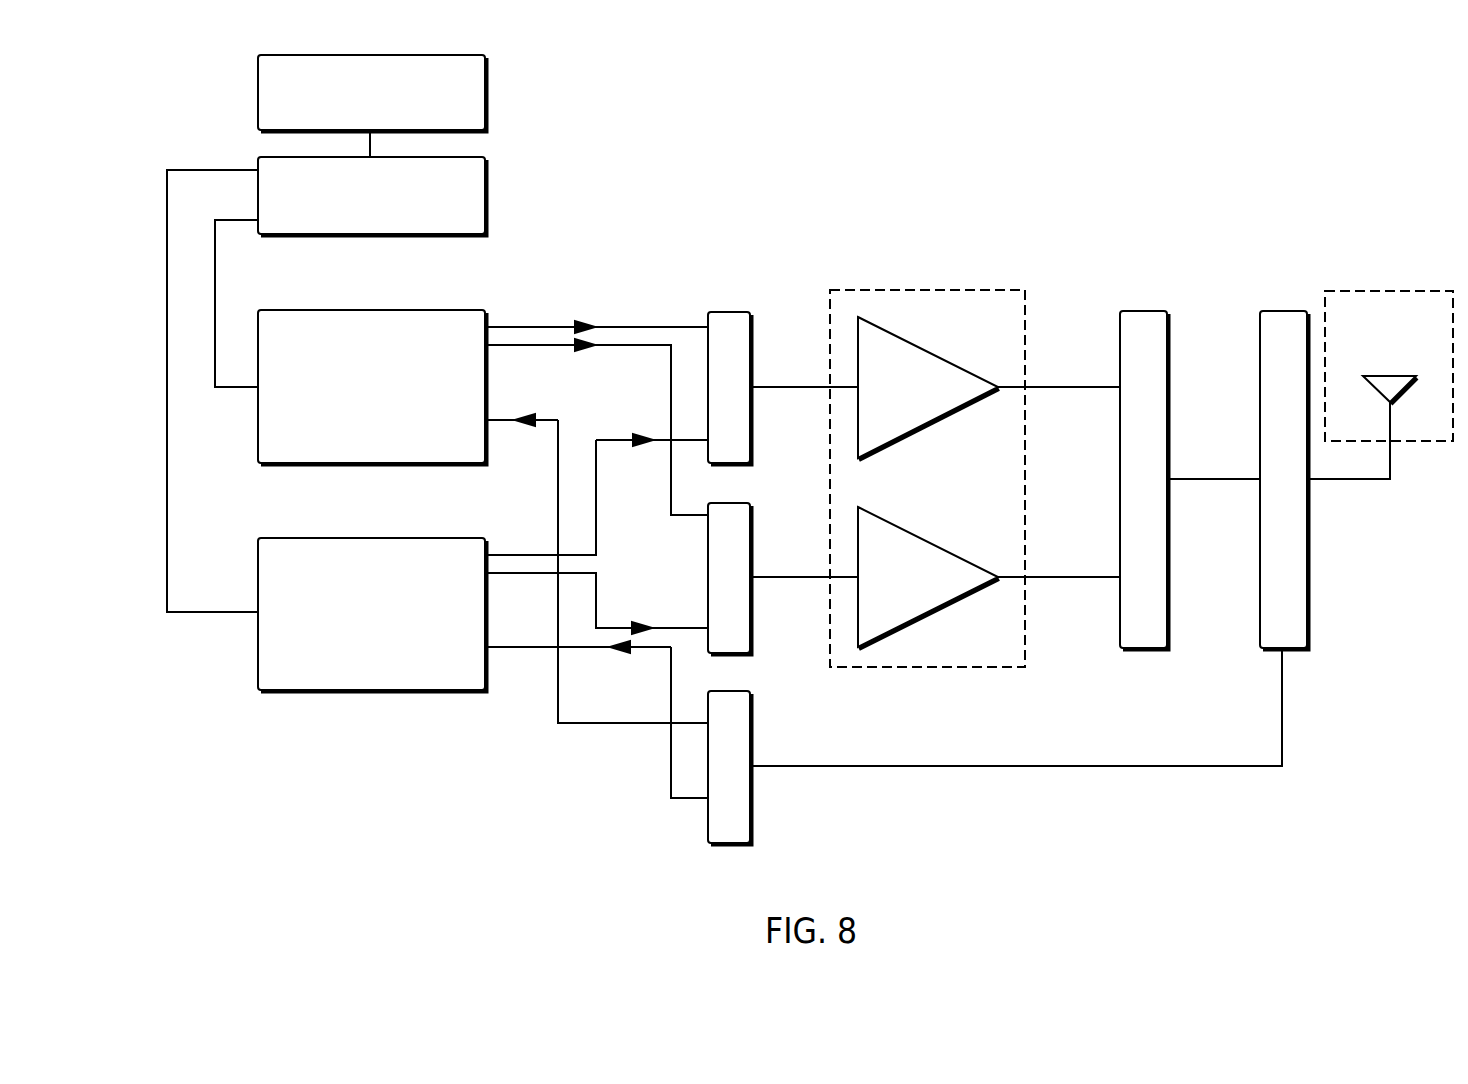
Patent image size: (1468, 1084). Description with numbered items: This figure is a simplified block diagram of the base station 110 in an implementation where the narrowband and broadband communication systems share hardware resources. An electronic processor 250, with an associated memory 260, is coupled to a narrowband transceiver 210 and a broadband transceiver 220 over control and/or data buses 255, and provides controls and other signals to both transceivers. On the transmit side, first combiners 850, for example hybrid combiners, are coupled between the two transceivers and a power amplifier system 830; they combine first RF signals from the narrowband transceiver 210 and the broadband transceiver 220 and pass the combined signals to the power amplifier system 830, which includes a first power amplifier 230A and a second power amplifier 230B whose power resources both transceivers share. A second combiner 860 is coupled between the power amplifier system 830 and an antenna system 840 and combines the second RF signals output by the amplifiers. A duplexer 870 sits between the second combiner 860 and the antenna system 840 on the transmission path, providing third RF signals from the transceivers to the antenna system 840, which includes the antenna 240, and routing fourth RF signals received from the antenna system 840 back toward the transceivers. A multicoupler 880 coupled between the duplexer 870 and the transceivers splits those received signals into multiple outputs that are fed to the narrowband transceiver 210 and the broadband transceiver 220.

The base station 110 is at (1374, 112).
The narrowband transceiver 210 is at (370, 310).
The broadband transceiver 220 is at (370, 538).
The first power amplifier 230A is at (930, 352).
The second power amplifier 230B is at (930, 542).
The antenna 240 is at (1389, 376).
The electronic processor 250 is at (258, 193).
The control and/or data buses 255 is at (167, 392).
The memory 260 is at (258, 91).
The power amplifier system 830 is at (929, 290).
The antenna system 840 is at (1390, 291).
The first combiners 850 is at (729, 312).
The second combiner 860 is at (1141, 311).
The duplexer 870 is at (1282, 311).
The multicoupler 880 is at (738, 845).